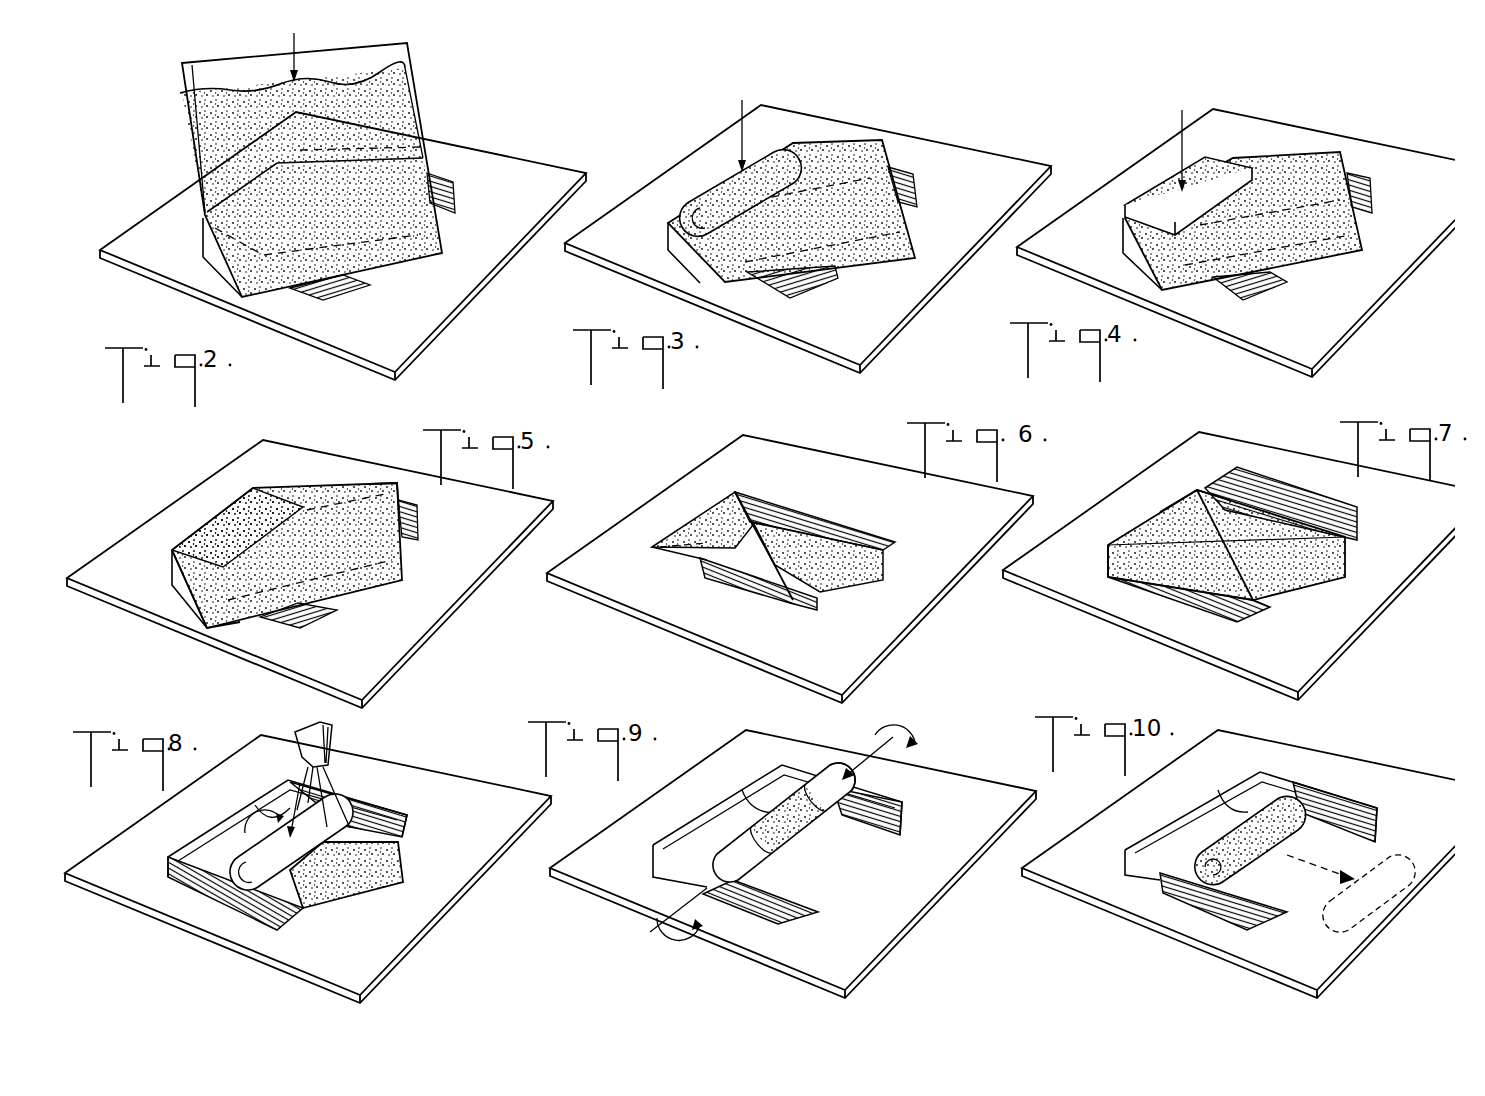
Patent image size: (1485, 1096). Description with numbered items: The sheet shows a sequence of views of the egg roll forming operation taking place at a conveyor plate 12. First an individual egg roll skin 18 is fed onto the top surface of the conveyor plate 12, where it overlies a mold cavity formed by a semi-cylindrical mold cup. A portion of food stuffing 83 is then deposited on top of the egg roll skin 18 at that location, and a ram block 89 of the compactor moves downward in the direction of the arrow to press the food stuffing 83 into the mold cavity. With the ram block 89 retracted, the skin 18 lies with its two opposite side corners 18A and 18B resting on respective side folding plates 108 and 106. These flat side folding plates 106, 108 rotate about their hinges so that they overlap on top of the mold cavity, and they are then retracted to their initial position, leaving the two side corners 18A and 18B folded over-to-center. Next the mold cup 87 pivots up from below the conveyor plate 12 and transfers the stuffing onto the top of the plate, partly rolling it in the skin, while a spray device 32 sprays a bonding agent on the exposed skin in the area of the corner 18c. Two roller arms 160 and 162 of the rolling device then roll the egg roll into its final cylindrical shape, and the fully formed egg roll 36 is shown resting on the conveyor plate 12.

In FIG. 2, the conveyor plate 12 is at (190, 277).
In FIG. 2, the egg roll skin 18 is at (400, 253).
In FIG. 3, the egg roll skin 18 is at (885, 227).
In FIG. 4, the egg roll skin 18 is at (1338, 237).
In FIG. 5, the egg roll skin 18 is at (362, 583).
In FIG. 5, the side corner 18A is at (207, 632).
In FIG. 7, the side corner 18A is at (1157, 542).
In FIG. 5, the side corner 18B is at (383, 488).
In FIG. 7, the side corner 18B is at (1197, 490).
In FIG. 7, the corner 18c is at (1333, 565).
In FIG. 8, the corner 18c is at (393, 863).
In FIG. 3, the food stuffing 83 is at (707, 200).
In FIG. 5, the food stuffing 83 is at (220, 525).
In FIG. 4, the ram block 89 is at (1133, 200).
In FIG. 5, the side folding plate 106 is at (412, 517).
In FIG. 6, the side folding plate 106 is at (807, 520).
In FIG. 7, the side folding plate 106 is at (1343, 520).
In FIG. 5, the side folding plate 108 is at (295, 620).
In FIG. 6, the side folding plate 108 is at (750, 580).
In FIG. 7, the side folding plate 108 is at (1237, 622).
In FIG. 8, the spray device 32 is at (330, 735).
In FIG. 8, the mold cup 87 is at (253, 887).
In FIG. 9, the roller arm 160 is at (720, 857).
In FIG. 9, the roller arm 162 is at (832, 780).
In FIG. 10, the fully formed egg roll 36 is at (1263, 817).